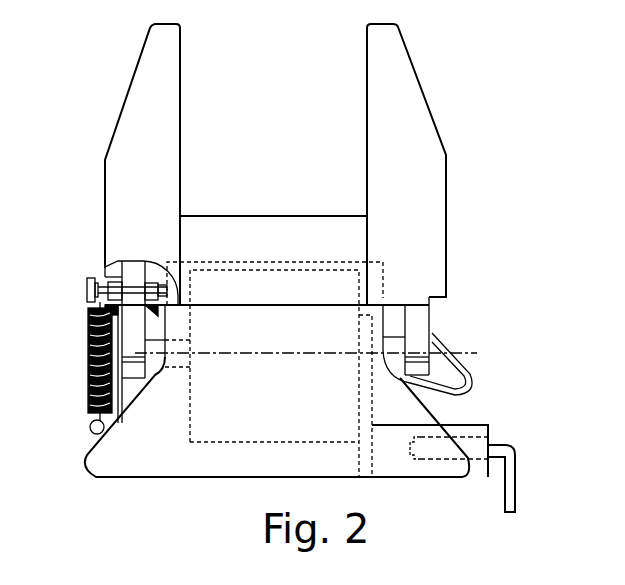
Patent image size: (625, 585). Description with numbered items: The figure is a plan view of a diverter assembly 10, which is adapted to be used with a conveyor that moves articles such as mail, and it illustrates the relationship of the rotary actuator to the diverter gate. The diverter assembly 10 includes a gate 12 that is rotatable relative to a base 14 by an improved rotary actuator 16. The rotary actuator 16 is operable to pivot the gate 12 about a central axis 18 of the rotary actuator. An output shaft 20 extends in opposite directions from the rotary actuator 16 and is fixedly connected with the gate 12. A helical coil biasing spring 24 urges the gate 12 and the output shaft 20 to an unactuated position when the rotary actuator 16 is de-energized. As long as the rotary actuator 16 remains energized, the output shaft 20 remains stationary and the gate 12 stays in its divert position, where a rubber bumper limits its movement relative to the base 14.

The diverter assembly 10 is at (315, 158).
The gate 12 is at (424, 86).
The base 14 is at (155, 452).
The rotary actuator 16 is at (275, 268).
The central axis 18 is at (466, 351).
The output shaft 20 is at (153, 359).
The helical coil biasing spring 24 is at (88, 343).